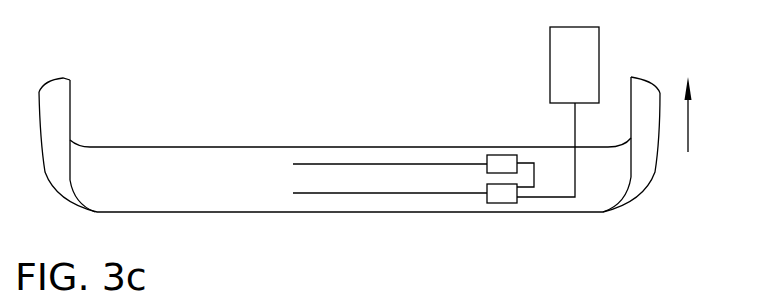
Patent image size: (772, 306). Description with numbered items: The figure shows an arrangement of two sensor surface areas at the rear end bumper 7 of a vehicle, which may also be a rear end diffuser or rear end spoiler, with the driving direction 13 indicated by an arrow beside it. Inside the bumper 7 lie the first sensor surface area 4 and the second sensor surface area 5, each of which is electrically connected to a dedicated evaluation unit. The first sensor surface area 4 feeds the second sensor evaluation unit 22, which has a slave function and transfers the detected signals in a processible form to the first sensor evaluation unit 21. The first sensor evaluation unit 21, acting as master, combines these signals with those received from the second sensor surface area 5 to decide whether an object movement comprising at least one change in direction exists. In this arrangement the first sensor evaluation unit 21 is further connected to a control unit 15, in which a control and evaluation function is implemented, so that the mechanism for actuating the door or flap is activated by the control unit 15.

The rear end bumper 7 is at (176, 146).
The first sensor surface area 4 is at (323, 164).
The second sensor surface area 5 is at (366, 193).
The first sensor evaluation unit 21 is at (492, 189).
The second sensor evaluation unit 22 is at (500, 162).
The control unit 15 is at (558, 112).
The driving direction 13 is at (688, 130).